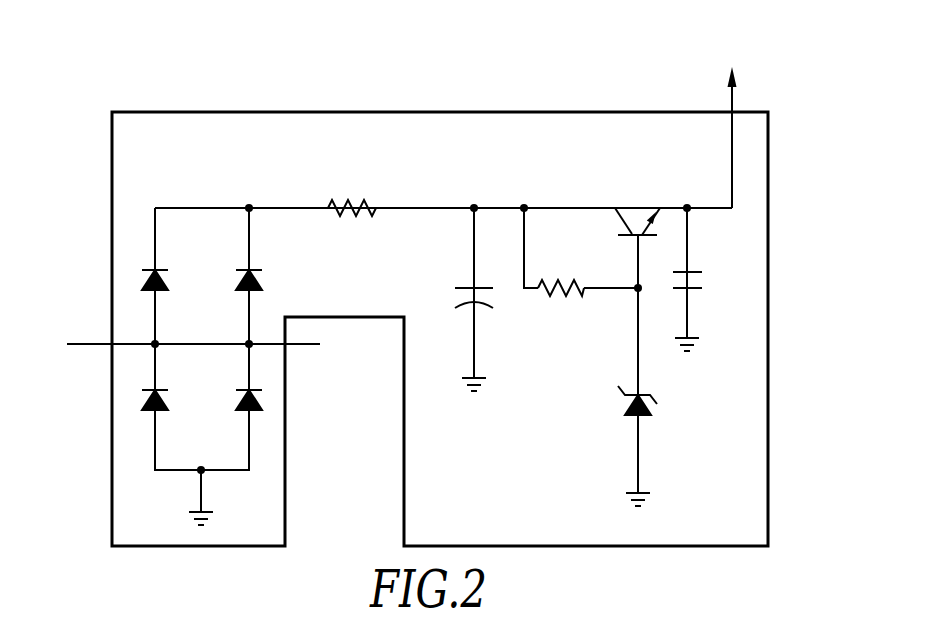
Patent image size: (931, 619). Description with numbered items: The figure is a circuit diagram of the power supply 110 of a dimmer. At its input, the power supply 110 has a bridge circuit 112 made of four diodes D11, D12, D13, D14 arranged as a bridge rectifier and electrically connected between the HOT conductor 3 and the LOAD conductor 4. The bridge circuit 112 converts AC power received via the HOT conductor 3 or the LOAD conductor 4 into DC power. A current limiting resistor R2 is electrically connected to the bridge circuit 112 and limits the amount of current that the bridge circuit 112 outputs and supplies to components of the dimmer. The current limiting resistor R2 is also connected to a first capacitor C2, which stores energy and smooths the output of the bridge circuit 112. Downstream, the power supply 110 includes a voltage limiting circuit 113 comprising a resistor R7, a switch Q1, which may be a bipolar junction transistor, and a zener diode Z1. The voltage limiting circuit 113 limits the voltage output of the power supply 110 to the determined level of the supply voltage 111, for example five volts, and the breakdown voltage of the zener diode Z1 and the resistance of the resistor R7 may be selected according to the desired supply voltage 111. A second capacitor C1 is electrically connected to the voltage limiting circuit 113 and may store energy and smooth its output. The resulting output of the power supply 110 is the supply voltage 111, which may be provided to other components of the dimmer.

The power supply 110 is at (320, 112).
The supply voltage 111 is at (747, 44).
The bridge circuit 112 is at (222, 207).
The voltage limiting circuit 113 is at (605, 193).
The HOT conductor 3 is at (97, 345).
The LOAD conductor 4 is at (300, 345).
The diode D11 is at (173, 269).
The diode D12 is at (270, 269).
The diode D13 is at (169, 383).
The diode D14 is at (229, 412).
The current limiting resistor R2 is at (365, 205).
The resistor R7 is at (561, 309).
The second capacitor C1 is at (701, 270).
The first capacitor C2 is at (459, 294).
The switch Q1 is at (637, 205).
The zener diode Z1 is at (623, 402).